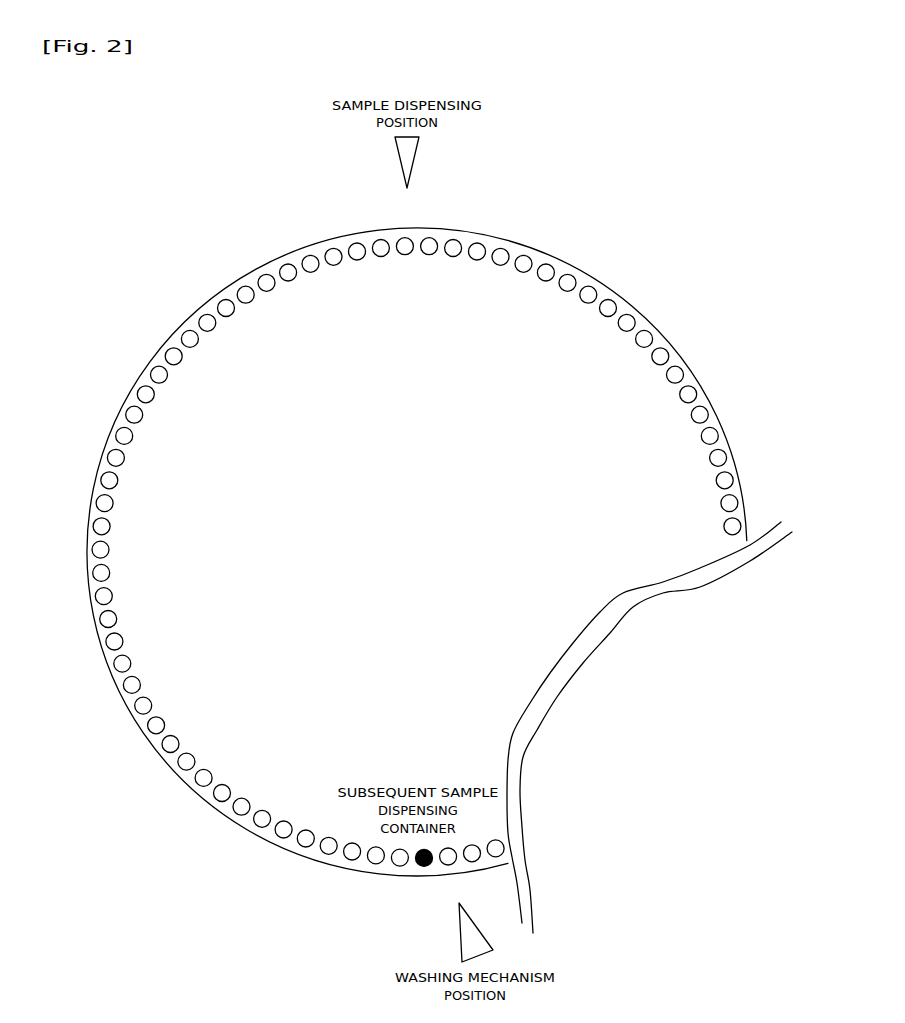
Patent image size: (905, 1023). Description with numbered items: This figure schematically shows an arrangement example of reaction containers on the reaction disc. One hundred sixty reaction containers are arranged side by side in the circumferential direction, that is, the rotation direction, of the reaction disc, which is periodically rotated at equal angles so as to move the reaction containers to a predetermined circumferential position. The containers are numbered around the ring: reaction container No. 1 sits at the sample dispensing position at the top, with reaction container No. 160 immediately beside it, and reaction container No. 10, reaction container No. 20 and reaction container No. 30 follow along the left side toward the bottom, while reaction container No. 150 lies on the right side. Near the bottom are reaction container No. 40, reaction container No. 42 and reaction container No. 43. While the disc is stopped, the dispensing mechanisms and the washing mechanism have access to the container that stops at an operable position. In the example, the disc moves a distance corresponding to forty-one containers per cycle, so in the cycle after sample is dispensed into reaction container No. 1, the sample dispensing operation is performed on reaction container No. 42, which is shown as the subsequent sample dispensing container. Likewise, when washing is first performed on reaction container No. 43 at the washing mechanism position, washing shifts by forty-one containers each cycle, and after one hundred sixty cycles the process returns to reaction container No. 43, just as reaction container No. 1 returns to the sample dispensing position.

The reaction container No. 1 is at (406, 233).
The reaction container No. 10 is at (197, 318).
The reaction container No. 20 is at (88, 533).
The reaction container No. 30 is at (152, 753).
The reaction container No. 40 is at (377, 870).
The reaction container No. 42 is at (424, 870).
The reaction container No. 43 is at (449, 870).
The reaction container No. 150 is at (655, 326).
The reaction container No. 160 is at (432, 233).